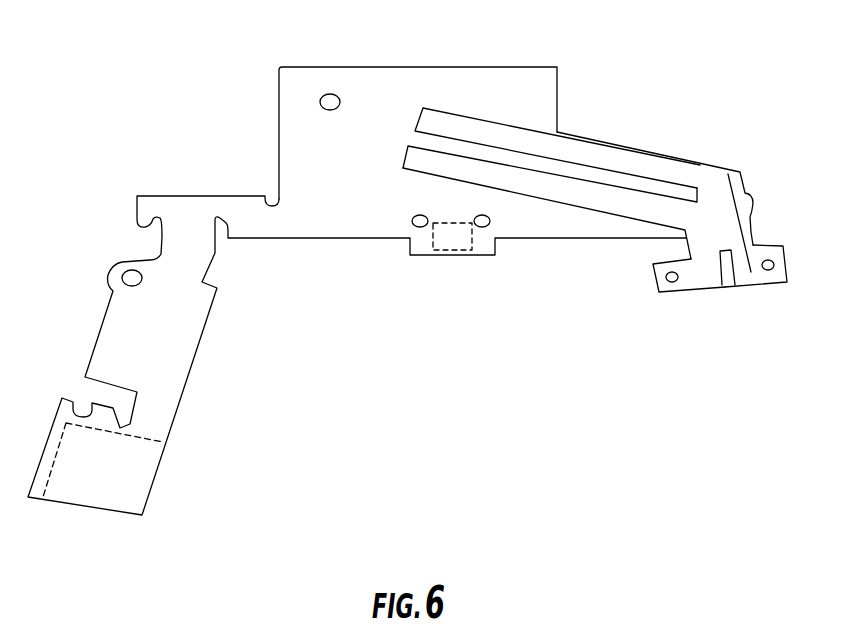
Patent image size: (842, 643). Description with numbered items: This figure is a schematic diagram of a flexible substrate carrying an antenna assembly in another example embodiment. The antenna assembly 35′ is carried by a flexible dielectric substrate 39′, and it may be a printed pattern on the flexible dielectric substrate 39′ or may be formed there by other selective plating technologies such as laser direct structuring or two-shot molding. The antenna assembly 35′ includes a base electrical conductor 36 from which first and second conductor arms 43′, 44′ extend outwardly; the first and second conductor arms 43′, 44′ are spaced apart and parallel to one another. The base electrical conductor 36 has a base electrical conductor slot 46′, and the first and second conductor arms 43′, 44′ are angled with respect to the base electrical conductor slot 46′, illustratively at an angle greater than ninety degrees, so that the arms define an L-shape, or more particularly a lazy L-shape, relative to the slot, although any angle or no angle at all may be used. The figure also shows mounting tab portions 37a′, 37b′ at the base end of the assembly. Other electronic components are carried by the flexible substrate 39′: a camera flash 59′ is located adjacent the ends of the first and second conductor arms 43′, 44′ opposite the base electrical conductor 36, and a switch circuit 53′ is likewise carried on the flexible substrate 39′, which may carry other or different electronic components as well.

The antenna assembly 35′ is at (618, 105).
The base electrical conductor 36 is at (712, 207).
The first mounting tab 37a′ is at (746, 262).
The second mounting tab 37b′ is at (705, 275).
The flexible dielectric substrate 39′ is at (302, 147).
The first conductor arm 43′ is at (418, 160).
The second conductor arm 44′ is at (443, 132).
The base electrical conductor slot 46′ is at (728, 273).
The switch circuit 53′ is at (453, 238).
The camera flash 59′ is at (92, 488).